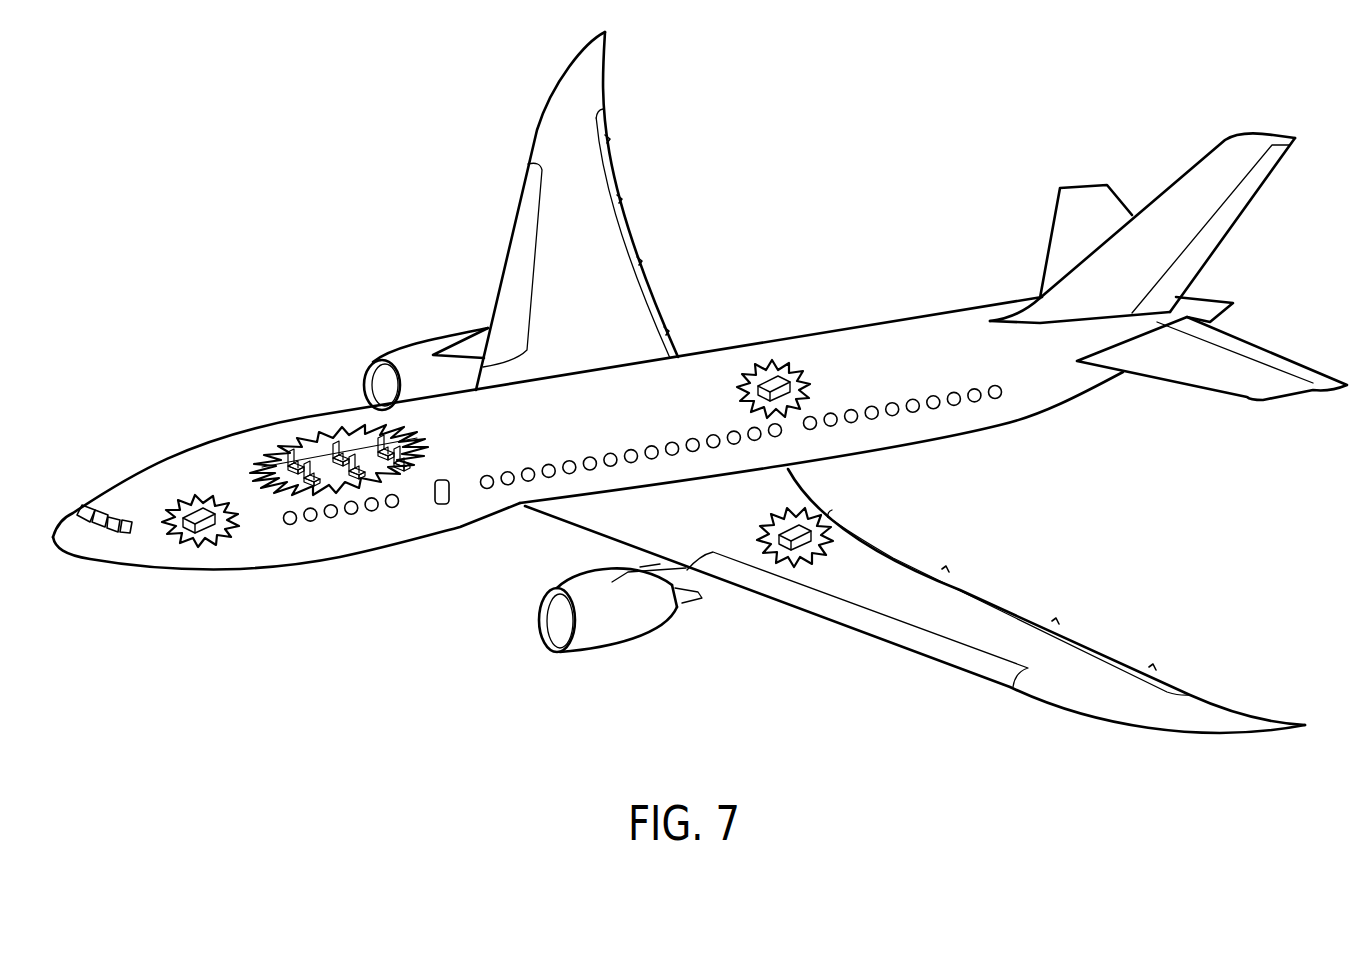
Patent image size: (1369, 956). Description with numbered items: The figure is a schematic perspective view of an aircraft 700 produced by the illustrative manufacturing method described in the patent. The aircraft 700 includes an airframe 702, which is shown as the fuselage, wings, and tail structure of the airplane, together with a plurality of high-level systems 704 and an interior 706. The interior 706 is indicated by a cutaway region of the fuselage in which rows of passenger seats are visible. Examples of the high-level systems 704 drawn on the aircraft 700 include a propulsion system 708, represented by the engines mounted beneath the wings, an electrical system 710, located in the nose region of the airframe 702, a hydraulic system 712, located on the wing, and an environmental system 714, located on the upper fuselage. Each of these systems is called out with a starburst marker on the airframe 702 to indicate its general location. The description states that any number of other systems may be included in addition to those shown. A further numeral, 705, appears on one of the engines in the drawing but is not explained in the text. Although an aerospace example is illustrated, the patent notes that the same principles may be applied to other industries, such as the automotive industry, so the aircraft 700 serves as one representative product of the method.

The aircraft 700 is at (212, 172).
The airframe 702 is at (315, 390).
The high-level systems 704 is at (897, 291).
The engine 705 is at (623, 625).
The interior 706 is at (328, 404).
The propulsion system 708 is at (408, 353).
The electrical system 710 is at (200, 497).
The hydraulic system 712 is at (803, 517).
The environmental system 714 is at (772, 382).